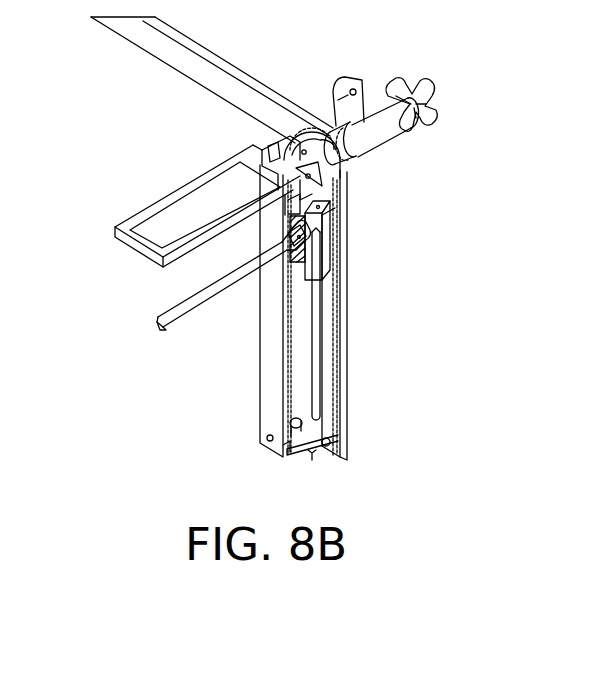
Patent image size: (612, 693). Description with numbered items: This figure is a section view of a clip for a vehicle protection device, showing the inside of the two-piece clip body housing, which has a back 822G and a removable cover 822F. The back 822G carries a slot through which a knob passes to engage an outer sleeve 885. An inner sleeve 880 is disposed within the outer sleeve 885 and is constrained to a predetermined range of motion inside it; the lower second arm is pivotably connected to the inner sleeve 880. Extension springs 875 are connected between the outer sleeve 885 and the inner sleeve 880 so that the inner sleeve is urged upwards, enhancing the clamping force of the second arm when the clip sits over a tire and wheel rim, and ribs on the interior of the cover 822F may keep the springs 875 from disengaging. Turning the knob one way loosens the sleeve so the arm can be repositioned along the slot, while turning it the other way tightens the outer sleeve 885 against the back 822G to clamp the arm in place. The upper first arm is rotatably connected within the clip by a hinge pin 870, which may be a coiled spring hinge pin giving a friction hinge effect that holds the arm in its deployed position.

The hinge pin 870 is at (318, 182).
The extension springs 875 is at (322, 250).
The inner sleeve 880 is at (330, 266).
The outer sleeve 885 is at (313, 287).
The removable cover 822F is at (267, 426).
The back 822G is at (330, 405).